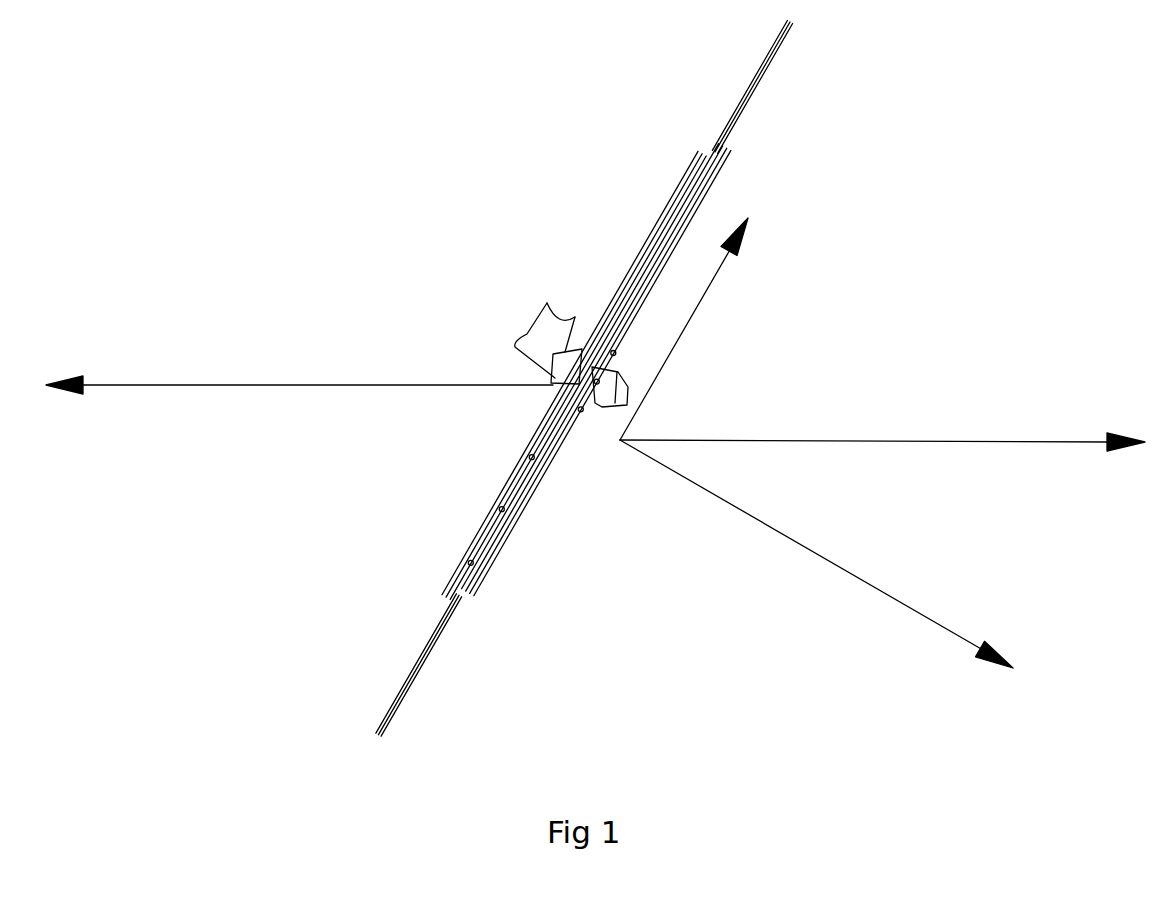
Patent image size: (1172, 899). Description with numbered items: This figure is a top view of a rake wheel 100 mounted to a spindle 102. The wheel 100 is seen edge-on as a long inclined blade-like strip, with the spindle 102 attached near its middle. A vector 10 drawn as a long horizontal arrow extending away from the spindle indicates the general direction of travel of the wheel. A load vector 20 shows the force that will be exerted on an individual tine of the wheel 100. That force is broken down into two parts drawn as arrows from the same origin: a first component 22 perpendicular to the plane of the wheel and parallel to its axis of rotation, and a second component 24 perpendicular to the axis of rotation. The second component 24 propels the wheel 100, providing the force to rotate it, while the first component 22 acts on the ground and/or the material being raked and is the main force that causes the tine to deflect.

The wheel 100 is at (802, 132).
The spindle 102 is at (528, 342).
The vector 10 is at (299, 373).
The load vector 20 is at (882, 431).
The first component 22 is at (816, 554).
The second component 24 is at (684, 329).